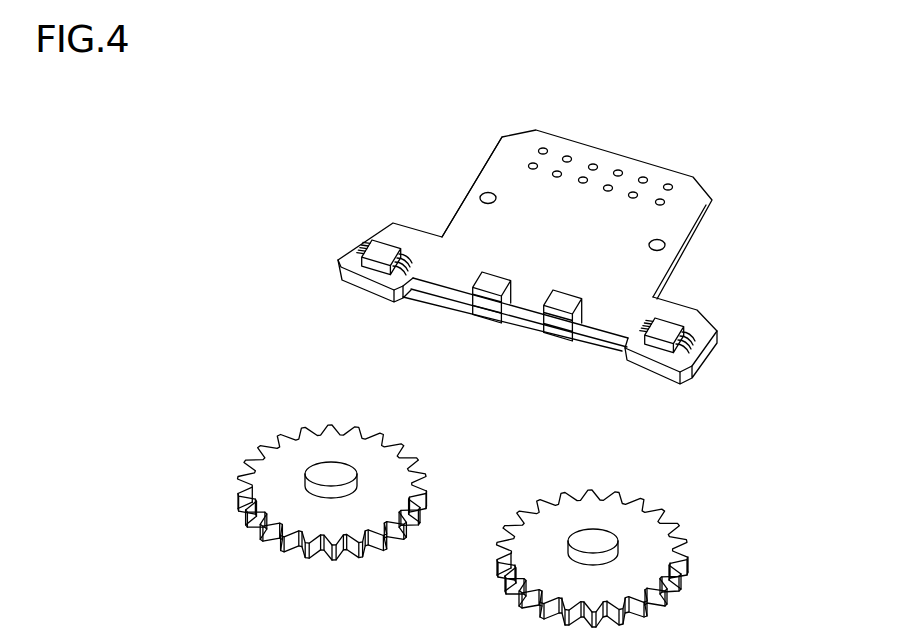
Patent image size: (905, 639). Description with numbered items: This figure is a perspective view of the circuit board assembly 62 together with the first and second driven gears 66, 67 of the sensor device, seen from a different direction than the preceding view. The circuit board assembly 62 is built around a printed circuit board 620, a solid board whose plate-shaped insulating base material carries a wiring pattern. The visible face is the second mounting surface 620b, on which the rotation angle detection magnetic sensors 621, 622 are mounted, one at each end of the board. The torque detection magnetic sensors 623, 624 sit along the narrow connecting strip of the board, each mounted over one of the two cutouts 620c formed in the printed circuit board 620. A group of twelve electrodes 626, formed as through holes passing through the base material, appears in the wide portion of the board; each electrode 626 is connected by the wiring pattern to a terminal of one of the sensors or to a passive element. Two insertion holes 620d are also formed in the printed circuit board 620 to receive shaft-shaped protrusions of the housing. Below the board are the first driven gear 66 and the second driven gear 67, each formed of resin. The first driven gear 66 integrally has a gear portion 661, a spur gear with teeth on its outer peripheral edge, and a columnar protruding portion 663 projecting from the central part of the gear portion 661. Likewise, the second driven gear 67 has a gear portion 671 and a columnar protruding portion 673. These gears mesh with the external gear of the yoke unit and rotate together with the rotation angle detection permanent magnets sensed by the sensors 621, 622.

The circuit board assembly 62 is at (711, 278).
The printed circuit board 620 is at (592, 144).
The second mounting surface 620b is at (597, 220).
The cutout 620c is at (539, 284).
The insertion hole 620d is at (487, 192).
The rotation angle detection magnetic sensor 621 is at (377, 252).
The rotation angle detection magnetic sensor 622 is at (672, 332).
The torque detection magnetic sensor 623 is at (482, 322).
The torque detection magnetic sensor 624 is at (553, 340).
The electrode 626 is at (567, 156).
The first driven gear 66 is at (685, 504).
The gear portion 661 is at (685, 578).
The protruding portion 663 is at (593, 538).
The second driven gear 67 is at (432, 448).
The gear portion 671 is at (242, 475).
The protruding portion 673 is at (320, 473).